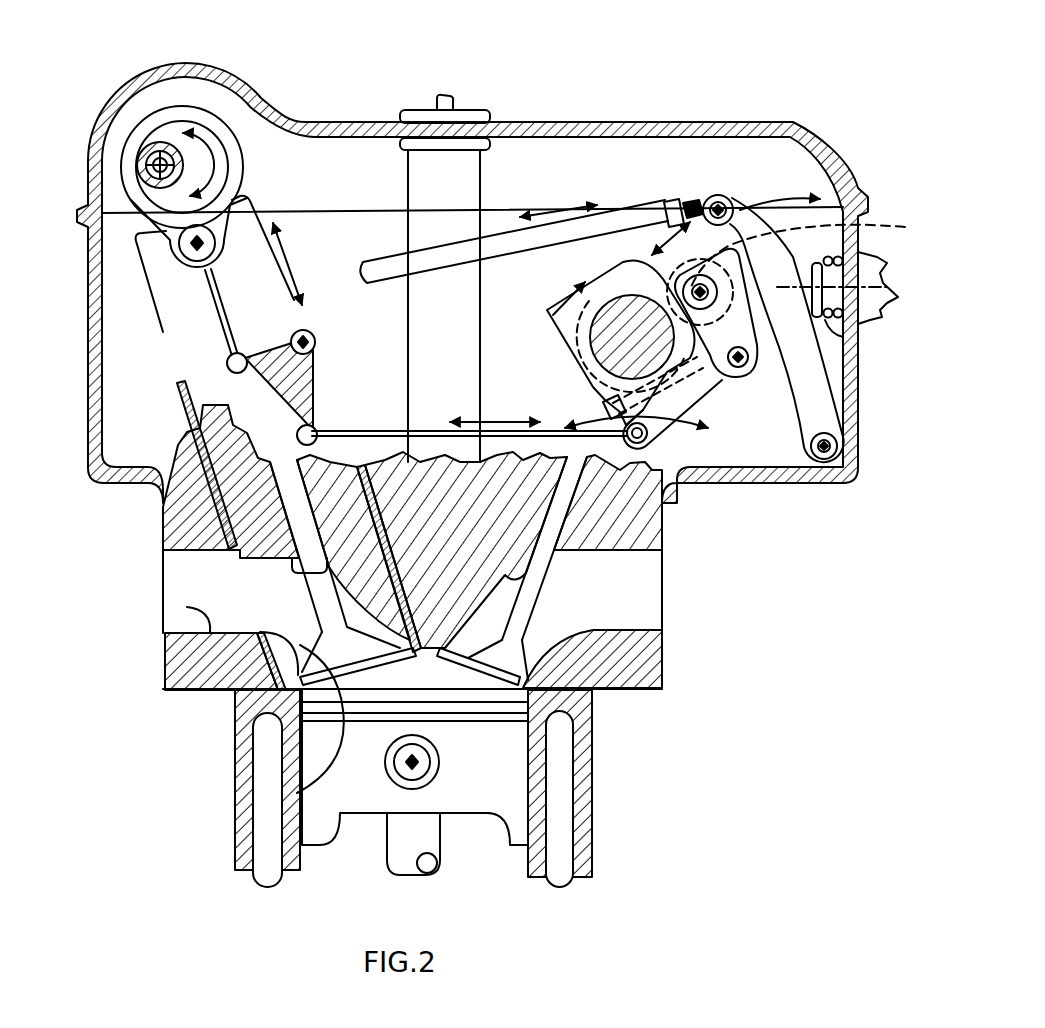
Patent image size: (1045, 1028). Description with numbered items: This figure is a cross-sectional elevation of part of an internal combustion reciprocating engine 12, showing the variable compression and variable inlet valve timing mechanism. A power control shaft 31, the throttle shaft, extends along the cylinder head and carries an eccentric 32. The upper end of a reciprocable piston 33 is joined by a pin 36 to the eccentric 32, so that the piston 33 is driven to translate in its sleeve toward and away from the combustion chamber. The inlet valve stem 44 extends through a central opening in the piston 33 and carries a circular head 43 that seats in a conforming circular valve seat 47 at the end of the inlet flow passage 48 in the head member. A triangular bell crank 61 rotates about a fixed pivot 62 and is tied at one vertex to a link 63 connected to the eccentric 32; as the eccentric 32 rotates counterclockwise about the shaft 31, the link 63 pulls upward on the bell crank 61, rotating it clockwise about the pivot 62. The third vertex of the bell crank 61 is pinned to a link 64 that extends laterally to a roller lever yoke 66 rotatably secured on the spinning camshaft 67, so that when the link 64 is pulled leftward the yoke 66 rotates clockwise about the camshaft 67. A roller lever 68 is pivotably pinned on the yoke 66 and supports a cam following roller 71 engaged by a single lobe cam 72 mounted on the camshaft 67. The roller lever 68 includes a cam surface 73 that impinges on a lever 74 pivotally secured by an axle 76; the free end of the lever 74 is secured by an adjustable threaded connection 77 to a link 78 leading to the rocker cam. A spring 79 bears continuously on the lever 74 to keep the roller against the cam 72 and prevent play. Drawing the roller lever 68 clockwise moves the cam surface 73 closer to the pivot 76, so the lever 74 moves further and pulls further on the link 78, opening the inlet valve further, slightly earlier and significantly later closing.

The internal combustion reciprocating engine 12 is at (203, 716).
The power control shaft 31 is at (157, 160).
The eccentric 32 is at (223, 112).
The reciprocable piston 33 is at (258, 221).
The pin 36 is at (193, 245).
The circular head 43 is at (297, 793).
The valve stem 44 is at (320, 555).
The circular valve seat 47 is at (290, 670).
The inlet flow passage 48 is at (187, 607).
The bell crank 61 is at (316, 366).
The fixed pivot 62 is at (316, 342).
The link 63 is at (220, 325).
The link 64 is at (381, 431).
The roller lever yoke 66 is at (695, 372).
The camshaft 67 is at (612, 340).
The roller lever 68 is at (740, 367).
The cam following roller 71 is at (815, 252).
The single lobe cam 72 is at (638, 260).
The cam surface 73 is at (755, 273).
The lever 74 is at (808, 365).
The axle 76 is at (836, 457).
The adjustable threaded connection 77 is at (690, 205).
The link 78 is at (437, 252).
The spring 79 is at (840, 331).